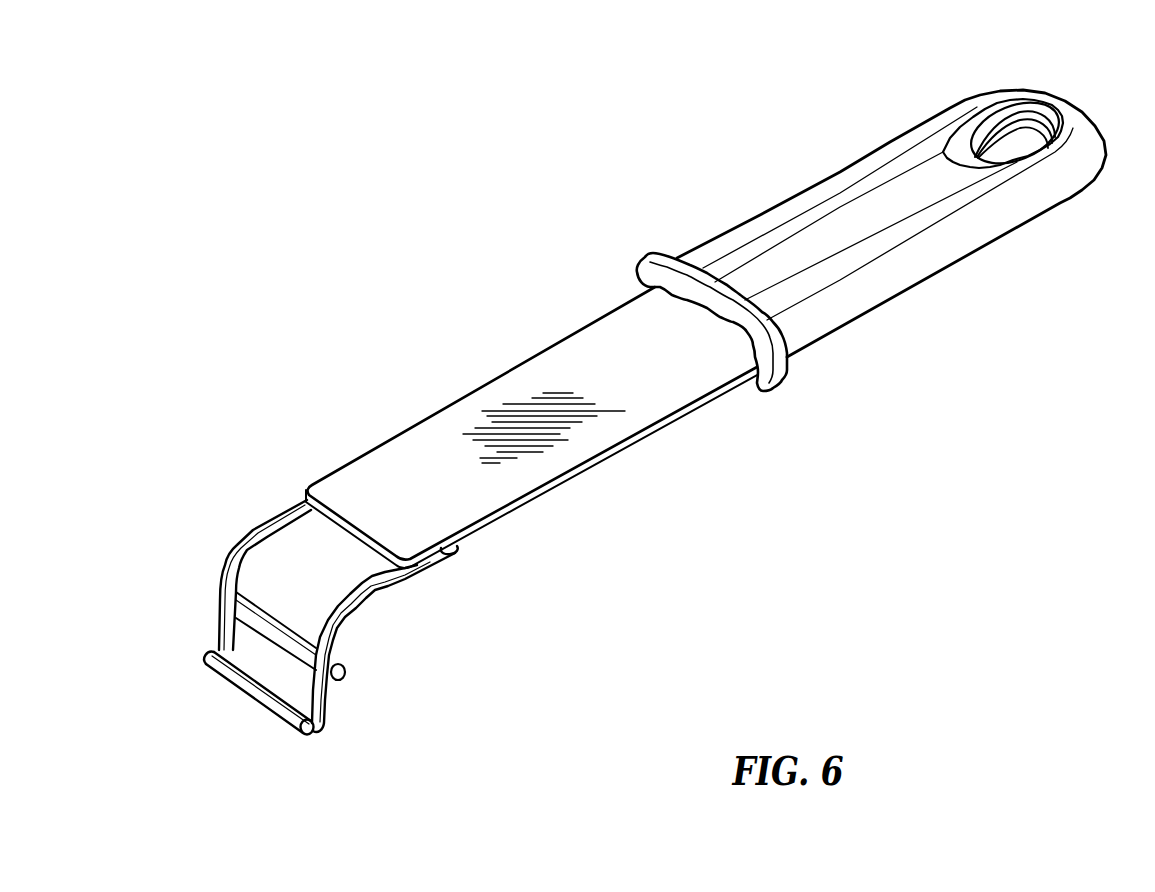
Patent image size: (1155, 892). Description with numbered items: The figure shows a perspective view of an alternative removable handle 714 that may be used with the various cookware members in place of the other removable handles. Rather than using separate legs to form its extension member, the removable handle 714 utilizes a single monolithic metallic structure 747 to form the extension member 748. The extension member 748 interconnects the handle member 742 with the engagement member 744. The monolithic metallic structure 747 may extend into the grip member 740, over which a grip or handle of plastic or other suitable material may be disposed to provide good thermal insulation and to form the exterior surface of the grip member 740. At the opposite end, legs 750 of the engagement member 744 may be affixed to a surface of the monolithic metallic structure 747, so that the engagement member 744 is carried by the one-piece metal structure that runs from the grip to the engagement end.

The removable handle 714 is at (651, 424).
The grip member 740 is at (845, 210).
The handle member 742 is at (968, 255).
The engagement member 744 is at (340, 700).
The monolithic metallic structure 747 is at (412, 457).
The extension member 748 is at (472, 413).
The leg 750 is at (262, 533).